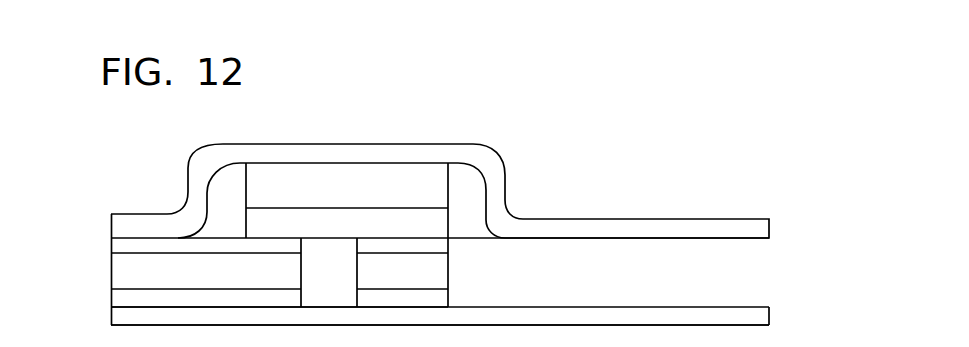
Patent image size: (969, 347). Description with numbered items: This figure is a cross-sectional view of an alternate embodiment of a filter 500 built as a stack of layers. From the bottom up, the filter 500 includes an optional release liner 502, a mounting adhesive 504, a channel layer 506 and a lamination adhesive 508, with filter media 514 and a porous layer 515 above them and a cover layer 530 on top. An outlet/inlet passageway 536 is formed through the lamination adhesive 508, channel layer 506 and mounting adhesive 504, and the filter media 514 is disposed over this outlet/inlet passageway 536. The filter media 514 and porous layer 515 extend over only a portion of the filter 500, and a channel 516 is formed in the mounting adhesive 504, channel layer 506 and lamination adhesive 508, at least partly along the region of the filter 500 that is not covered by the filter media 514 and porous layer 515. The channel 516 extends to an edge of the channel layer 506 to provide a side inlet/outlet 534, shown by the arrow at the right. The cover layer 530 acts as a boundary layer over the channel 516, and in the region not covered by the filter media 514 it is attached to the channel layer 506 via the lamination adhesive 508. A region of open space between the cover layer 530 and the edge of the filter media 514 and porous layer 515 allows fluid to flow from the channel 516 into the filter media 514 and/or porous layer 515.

The filter 500 is at (371, 112).
The release liner 502 is at (112, 314).
The mounting adhesive 504 is at (112, 297).
The channel layer 506 is at (112, 263).
The lamination adhesive 508 is at (112, 240).
The filter media 514 is at (448, 225).
The porous layer 515 is at (448, 190).
The channel 516 is at (634, 255).
The cover layer 530 is at (732, 220).
The side inlet/outlet 534 is at (752, 277).
The outlet/inlet passageway 536 is at (325, 222).